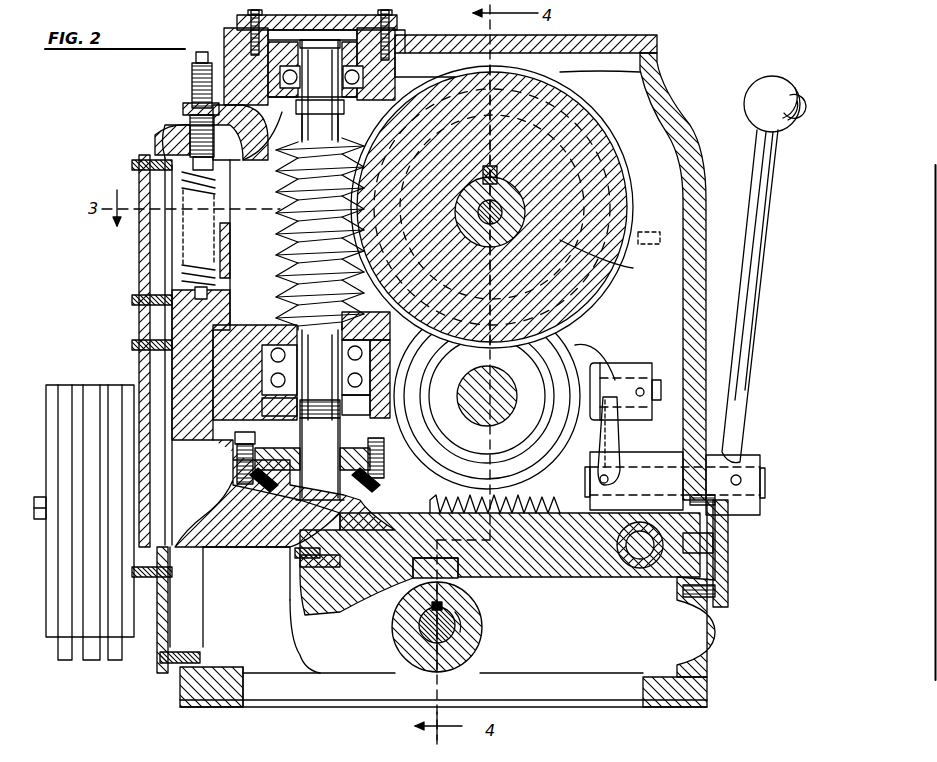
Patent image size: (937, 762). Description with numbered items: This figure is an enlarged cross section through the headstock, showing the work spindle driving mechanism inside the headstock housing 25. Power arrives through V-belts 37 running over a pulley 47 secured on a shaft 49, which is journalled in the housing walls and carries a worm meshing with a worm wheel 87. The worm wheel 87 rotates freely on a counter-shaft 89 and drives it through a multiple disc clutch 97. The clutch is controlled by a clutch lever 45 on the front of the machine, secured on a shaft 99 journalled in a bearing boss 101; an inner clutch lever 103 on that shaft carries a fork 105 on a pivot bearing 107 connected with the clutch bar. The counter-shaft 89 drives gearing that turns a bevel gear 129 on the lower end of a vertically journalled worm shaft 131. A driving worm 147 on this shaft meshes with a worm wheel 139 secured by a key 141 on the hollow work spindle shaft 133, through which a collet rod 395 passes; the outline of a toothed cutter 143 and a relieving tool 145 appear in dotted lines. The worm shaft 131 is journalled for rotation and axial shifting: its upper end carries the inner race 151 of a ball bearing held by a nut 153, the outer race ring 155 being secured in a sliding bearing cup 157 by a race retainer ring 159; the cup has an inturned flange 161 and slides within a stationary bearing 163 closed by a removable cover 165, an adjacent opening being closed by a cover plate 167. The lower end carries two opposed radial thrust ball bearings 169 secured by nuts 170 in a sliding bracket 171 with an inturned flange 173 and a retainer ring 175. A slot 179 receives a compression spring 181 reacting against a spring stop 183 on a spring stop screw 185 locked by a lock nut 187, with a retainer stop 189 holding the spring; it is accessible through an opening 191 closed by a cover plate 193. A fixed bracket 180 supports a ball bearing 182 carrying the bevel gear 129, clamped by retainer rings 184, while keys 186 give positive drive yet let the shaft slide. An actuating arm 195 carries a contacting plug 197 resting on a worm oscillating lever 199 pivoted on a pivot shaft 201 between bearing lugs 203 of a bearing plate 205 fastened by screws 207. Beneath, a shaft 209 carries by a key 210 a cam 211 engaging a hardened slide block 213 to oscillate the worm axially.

The headstock housing 25 is at (678, 93).
The V-belts 37 is at (105, 660).
The clutch lever 45 is at (752, 370).
The pulley 47 is at (92, 385).
The driving shaft 49 is at (395, 522).
The worm wheel 87 is at (575, 345).
The counter-shaft 89 is at (492, 410).
The clutch 97 is at (530, 470).
The clutch lever shaft 99 is at (760, 470).
The bearing boss 101 is at (635, 464).
The inner clutch lever 103 is at (618, 424).
The fork 105 is at (594, 352).
The pivot bearing 107 is at (643, 365).
The bevel gear 129 is at (290, 522).
The worm shaft 131 is at (302, 284).
The work spindle shaft 133 is at (520, 197).
The worm wheel 139 is at (604, 121).
The key 141 is at (500, 170).
The toothed cutter 143 is at (615, 256).
The relieving tool 145 is at (668, 244).
The driving worm 147 is at (276, 238).
The inner race 151 is at (345, 100).
The nut 153 is at (312, 34).
The outer race ring 155 is at (396, 70).
The sliding bearing cup 157 is at (302, 120).
The race retainer ring 159 is at (395, 34).
The inturned flange 161 is at (296, 106).
The stationary bearing 163 is at (258, 130).
The removable cover 165 is at (245, 24).
The cover plate 167 is at (612, 35).
The radial thrust ball bearings 169 is at (270, 378).
The nuts 170 is at (301, 407).
The sliding bracket 171 is at (213, 350).
The inturned flange 173 is at (350, 415).
The retainer ring 175 is at (375, 314).
The slot 179 is at (175, 265).
The fixed bracket 180 is at (237, 468).
The compression spring 181 is at (182, 276).
The ball bearing 182 is at (262, 448).
The spring stop 183 is at (175, 160).
The retainer rings 184 is at (237, 440).
The spring stop screw 185 is at (192, 90).
The keys 186 is at (355, 476).
The lock nut 187 is at (183, 109).
The retainer stop 189 is at (207, 293).
The opening 191 is at (139, 175).
The cover plate 193 is at (139, 236).
The actuating arm 195 is at (210, 540).
The contacting plug 197 is at (295, 555).
The worm oscillating lever 199 is at (300, 610).
The pivot shaft 201 is at (630, 565).
The bearing lugs 203 is at (668, 570).
The bearing plate 205 is at (728, 550).
The screws 207 is at (728, 595).
The cam shaft 209 is at (462, 642).
The key 210 is at (420, 615).
The cam 211 is at (480, 600).
The hardened slide block 213 is at (460, 578).
The collet rod 395 is at (502, 218).